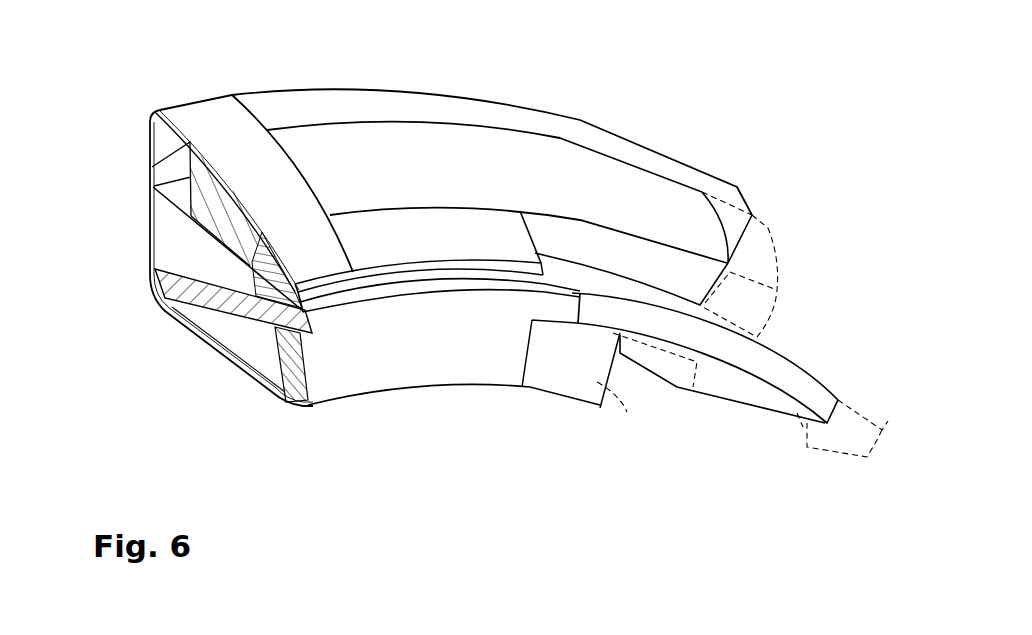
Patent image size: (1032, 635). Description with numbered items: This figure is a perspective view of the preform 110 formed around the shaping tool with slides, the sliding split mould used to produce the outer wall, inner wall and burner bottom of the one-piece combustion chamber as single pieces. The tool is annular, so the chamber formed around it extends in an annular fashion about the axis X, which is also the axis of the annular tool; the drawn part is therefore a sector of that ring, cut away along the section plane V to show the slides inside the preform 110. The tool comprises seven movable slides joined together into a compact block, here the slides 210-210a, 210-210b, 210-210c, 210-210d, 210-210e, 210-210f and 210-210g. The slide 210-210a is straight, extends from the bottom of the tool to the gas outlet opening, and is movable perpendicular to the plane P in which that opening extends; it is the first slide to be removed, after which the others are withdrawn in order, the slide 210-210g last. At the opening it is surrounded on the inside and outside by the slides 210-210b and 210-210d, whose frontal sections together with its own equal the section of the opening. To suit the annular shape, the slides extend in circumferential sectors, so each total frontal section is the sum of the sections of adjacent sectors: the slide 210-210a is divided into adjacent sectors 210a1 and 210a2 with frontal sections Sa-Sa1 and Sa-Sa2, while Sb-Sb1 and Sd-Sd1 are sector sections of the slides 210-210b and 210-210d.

The preform 110 is at (180, 98).
The frontal section of slide sector Sd-Sd1 is at (413, 265).
The slide 210-210d is at (503, 227).
The slide 210-210f is at (637, 217).
The slide 210-210g is at (163, 173).
The slide 210-210e is at (236, 356).
The slide 210-210b is at (397, 350).
The frontal section of slide sector Sb-Sb1 is at (404, 356).
The frontal section of slide sector Sa-Sa1 is at (462, 300).
The slide 210-210a is at (510, 328).
The slide sector 210a1 is at (575, 320).
The frontal section of slide sector Sa-Sa2 is at (668, 330).
The slide sector 210a2 is at (760, 385).
The slide 210-210c is at (623, 395).
The section plane V is at (111, 16).
The plane of the opening P is at (828, 238).
The axis X is at (535, 553).